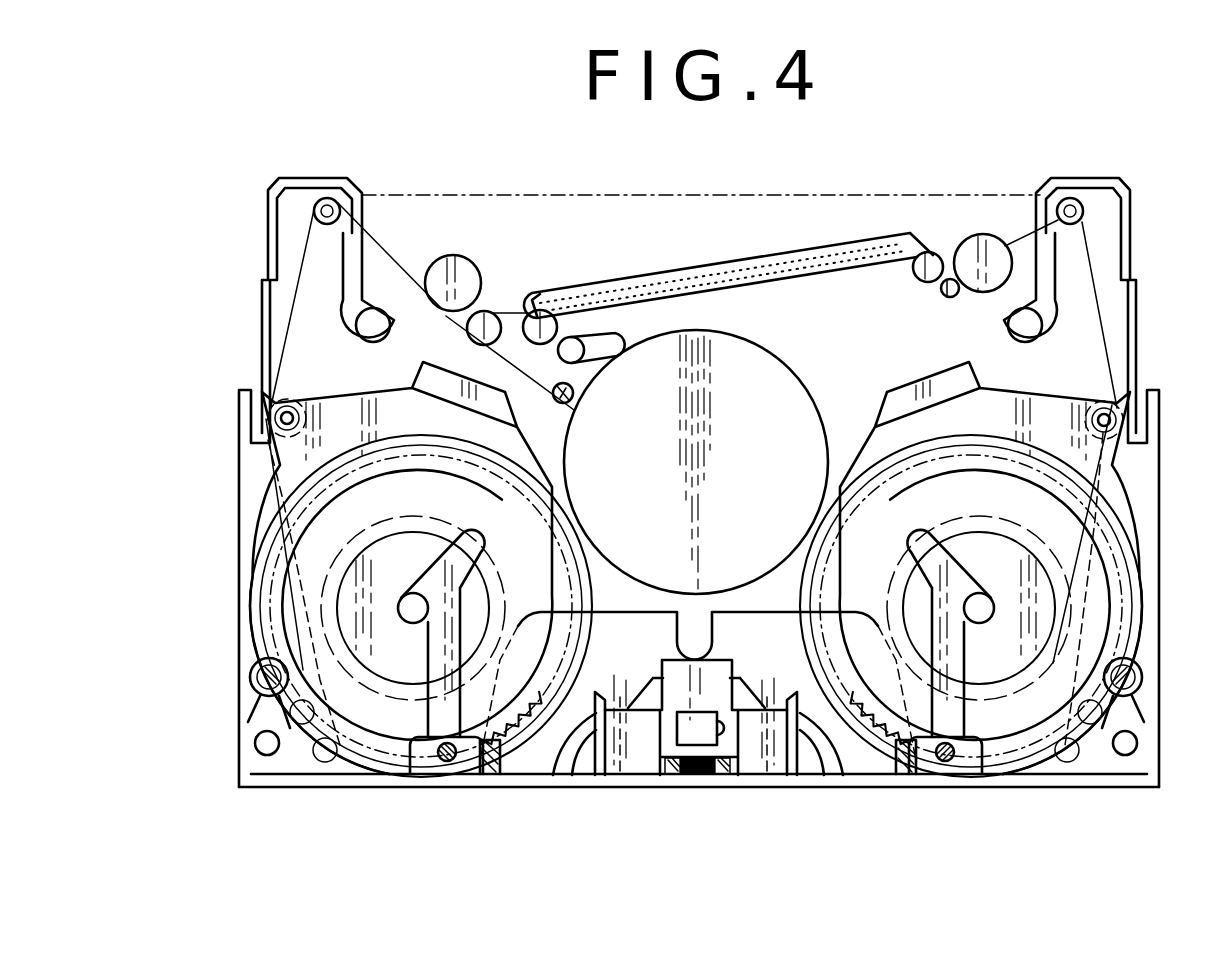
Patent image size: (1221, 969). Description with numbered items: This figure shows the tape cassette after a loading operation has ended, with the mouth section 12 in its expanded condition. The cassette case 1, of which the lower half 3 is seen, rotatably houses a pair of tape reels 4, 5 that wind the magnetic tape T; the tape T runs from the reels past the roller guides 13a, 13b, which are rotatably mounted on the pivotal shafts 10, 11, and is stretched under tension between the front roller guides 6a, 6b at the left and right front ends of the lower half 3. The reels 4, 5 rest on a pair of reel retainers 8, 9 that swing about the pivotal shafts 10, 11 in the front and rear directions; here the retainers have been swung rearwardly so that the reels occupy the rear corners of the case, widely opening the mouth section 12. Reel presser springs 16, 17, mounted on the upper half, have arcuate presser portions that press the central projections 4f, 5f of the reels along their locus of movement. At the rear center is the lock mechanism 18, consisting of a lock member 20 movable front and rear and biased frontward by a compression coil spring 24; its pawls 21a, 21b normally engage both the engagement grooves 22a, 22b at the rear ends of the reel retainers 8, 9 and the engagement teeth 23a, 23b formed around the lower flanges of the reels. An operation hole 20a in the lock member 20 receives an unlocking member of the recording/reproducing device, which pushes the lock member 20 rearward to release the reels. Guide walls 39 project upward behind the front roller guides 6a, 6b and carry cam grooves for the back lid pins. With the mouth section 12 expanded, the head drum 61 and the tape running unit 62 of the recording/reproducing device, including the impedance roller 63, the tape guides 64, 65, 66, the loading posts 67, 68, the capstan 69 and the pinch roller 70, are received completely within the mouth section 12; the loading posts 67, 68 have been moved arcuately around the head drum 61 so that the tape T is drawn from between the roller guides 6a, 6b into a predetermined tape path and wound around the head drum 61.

The cassette case 1 is at (1159, 776).
The lower half 3 is at (238, 762).
The tape reel 4 is at (300, 735).
The central projection 4f is at (411, 596).
The tape reel 5 is at (1093, 735).
The central projection 5f is at (981, 596).
The roller guide 6a is at (327, 197).
The roller guide 6b is at (1071, 197).
The reel retainer 8 is at (343, 396).
The reel retainer 9 is at (1053, 393).
The pivotal shaft 10 is at (278, 418).
The pivotal shaft 11 is at (1118, 418).
The mouth section 12 is at (845, 393).
The roller guide 13a is at (268, 455).
The roller guide 13b is at (1122, 460).
The reel presser spring 16 is at (427, 658).
The reel presser spring 17 is at (1008, 678).
The lock mechanism 18 is at (703, 796).
The lock member 20 is at (610, 760).
The operation hole 20a is at (716, 740).
The pawl 21a is at (563, 735).
The pawl 21b is at (830, 735).
The engagement groove 22a is at (473, 768).
The engagement groove 22b is at (920, 768).
The engagement teeth 23a is at (355, 758).
The engagement teeth 23b is at (1040, 758).
The compression coil spring 24 is at (682, 767).
The guide wall 39 is at (341, 276).
The head drum 61 is at (750, 352).
The tape running unit 62 is at (535, 290).
The impedance roller 63 is at (450, 270).
The tape guide 64 is at (484, 312).
The tape guide 65 is at (553, 390).
The tape guide 66 is at (920, 240).
The loading post 67 is at (606, 340).
The loading post 68 is at (548, 313).
The capstan 69 is at (944, 294).
The pinch roller 70 is at (985, 236).
The magnetic tape T is at (700, 262).